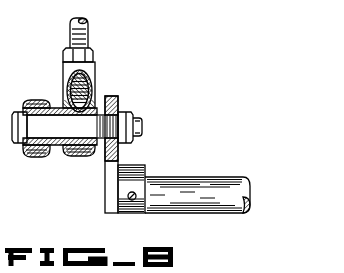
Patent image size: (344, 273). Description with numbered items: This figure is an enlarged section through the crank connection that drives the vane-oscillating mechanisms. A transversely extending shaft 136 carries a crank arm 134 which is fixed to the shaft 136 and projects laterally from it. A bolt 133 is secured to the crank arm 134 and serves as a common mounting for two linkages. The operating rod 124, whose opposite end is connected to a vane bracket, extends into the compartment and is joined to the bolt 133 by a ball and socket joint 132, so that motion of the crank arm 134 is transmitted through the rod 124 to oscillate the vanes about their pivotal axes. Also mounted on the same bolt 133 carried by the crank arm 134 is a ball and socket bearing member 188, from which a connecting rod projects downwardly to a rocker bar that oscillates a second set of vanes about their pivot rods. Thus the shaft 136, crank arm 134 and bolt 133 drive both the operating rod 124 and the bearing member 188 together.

The operating rod 124 is at (88, 24).
The ball and socket joint 132 is at (90, 109).
The bolt 133 is at (90, 129).
The crank arm 134 is at (110, 182).
The shaft 136 is at (185, 197).
The ball and socket bearing member 188 is at (40, 155).